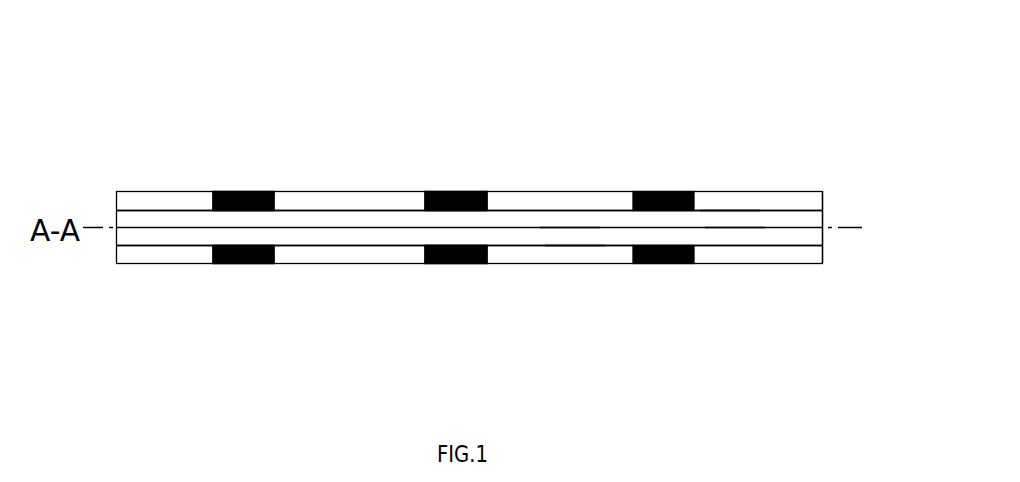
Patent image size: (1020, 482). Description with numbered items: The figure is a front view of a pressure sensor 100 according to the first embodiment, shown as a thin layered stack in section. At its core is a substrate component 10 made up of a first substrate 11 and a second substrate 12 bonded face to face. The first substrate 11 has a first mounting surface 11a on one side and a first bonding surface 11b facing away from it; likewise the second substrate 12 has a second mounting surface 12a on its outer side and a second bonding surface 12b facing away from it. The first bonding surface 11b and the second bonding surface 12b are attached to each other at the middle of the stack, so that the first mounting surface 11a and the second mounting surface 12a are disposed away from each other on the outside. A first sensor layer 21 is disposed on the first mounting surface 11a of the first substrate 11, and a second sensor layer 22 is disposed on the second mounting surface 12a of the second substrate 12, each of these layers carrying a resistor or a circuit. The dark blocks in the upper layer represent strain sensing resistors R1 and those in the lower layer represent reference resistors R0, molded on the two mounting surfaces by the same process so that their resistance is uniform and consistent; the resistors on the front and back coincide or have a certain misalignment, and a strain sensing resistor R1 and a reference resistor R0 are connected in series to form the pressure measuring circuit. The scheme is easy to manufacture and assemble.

The pressure sensor 100 is at (512, 40).
The substrate component 10 is at (898, 190).
The first substrate 11 is at (778, 218).
The second substrate 12 is at (778, 237).
The first mounting surface 11a is at (732, 202).
The first bonding surface 11b is at (737, 229).
The second mounting surface 12a is at (575, 246).
The second bonding surface 12b is at (572, 228).
The first sensor layer 21 is at (797, 202).
The second sensor layer 22 is at (780, 252).
The strain sensing resistor R1 is at (250, 191).
The reference resistor R0 is at (250, 265).